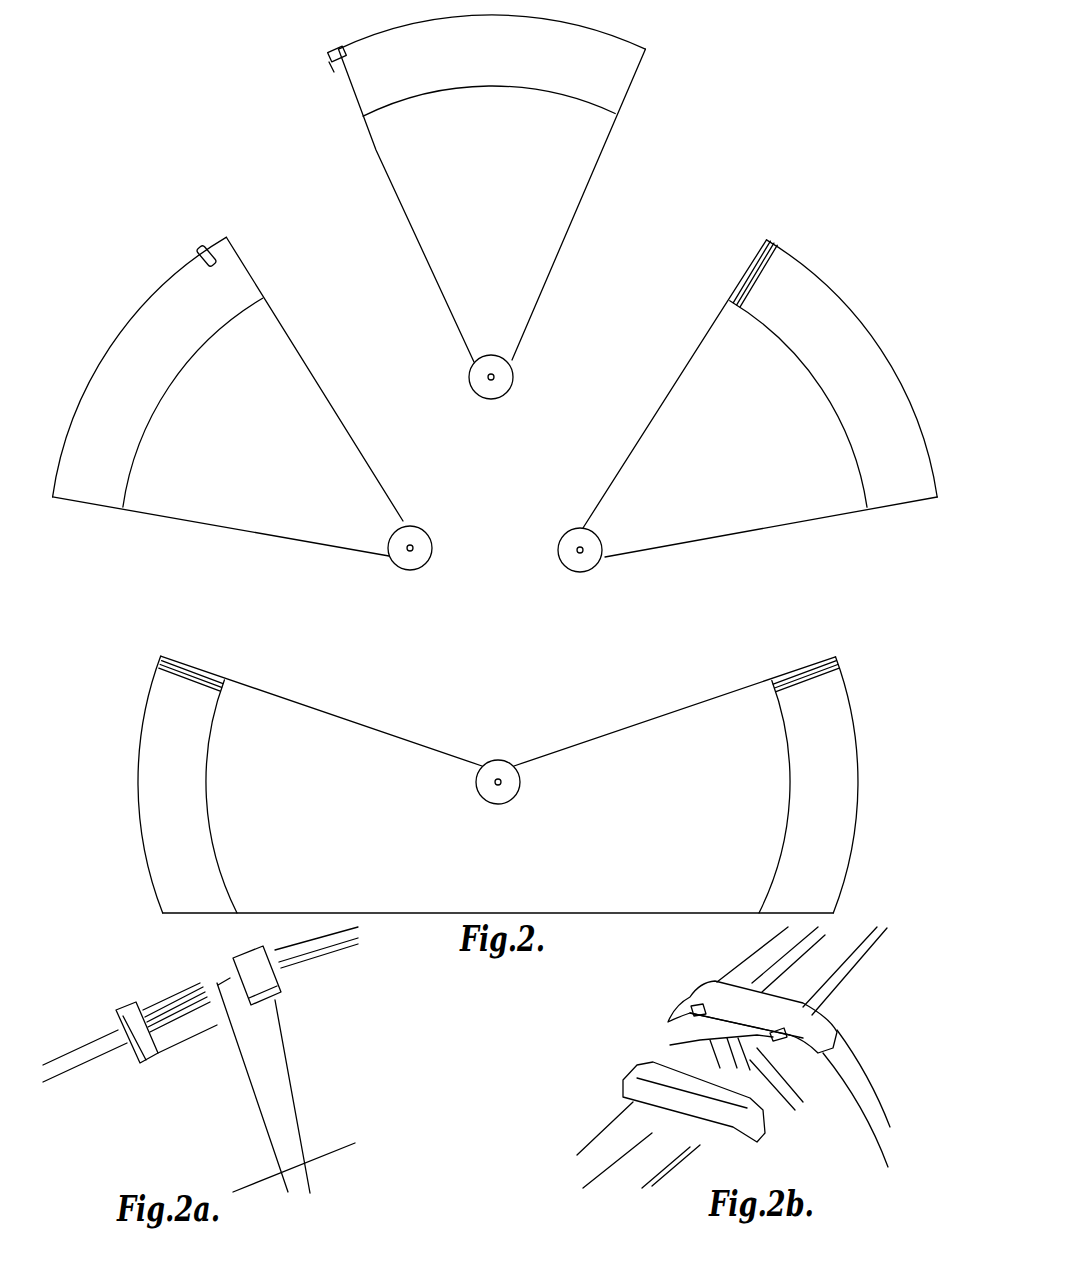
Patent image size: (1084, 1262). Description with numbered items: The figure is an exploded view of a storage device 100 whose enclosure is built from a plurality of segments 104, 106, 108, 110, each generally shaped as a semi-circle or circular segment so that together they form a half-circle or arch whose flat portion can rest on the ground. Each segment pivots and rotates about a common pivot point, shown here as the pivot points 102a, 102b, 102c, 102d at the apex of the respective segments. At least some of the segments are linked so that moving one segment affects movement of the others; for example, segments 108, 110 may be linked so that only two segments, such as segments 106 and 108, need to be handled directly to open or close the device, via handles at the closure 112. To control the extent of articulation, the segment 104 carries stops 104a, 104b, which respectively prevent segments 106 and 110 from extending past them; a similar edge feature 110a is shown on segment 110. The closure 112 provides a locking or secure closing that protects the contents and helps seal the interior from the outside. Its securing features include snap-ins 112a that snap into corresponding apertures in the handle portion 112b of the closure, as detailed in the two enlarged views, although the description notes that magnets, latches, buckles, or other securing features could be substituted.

In FIG. 2, the storage device 100 is at (175, 152).
In FIG. 2, the pivot point 102a is at (500, 760).
In FIG. 2, the pivot point 102b is at (412, 570).
In FIG. 2, the pivot point 102c is at (496, 399).
In FIG. 2, the pivot point 102d is at (571, 572).
In FIG. 2, the segment 104 is at (708, 690).
In FIG. 2, the stop 104a is at (203, 660).
In FIG. 2, the stop 104b is at (800, 665).
In FIG. 2, the segment 106 is at (320, 372).
In FIG. 2, the segment 108 is at (608, 146).
In FIG. 2, the segment 110 is at (680, 372).
In FIG. 2, the panel edge strip 110a is at (740, 272).
In FIG. 2, the closure 112 is at (332, 50).
In FIG. 2A, the closure 112 is at (273, 1006).
In FIG. 2B, the closure 112 is at (823, 1017).
In FIG. 2, the snap-ins 112a is at (329, 68).
In FIG. 2A, the snap-ins 112a is at (228, 982).
In FIG. 2B, the snap-ins 112a is at (690, 1006).
In FIG. 2, the handle portion 112b is at (203, 248).
In FIG. 2A, the handle portion 112b is at (126, 1005).
In FIG. 2B, the handle portion 112b is at (637, 1068).